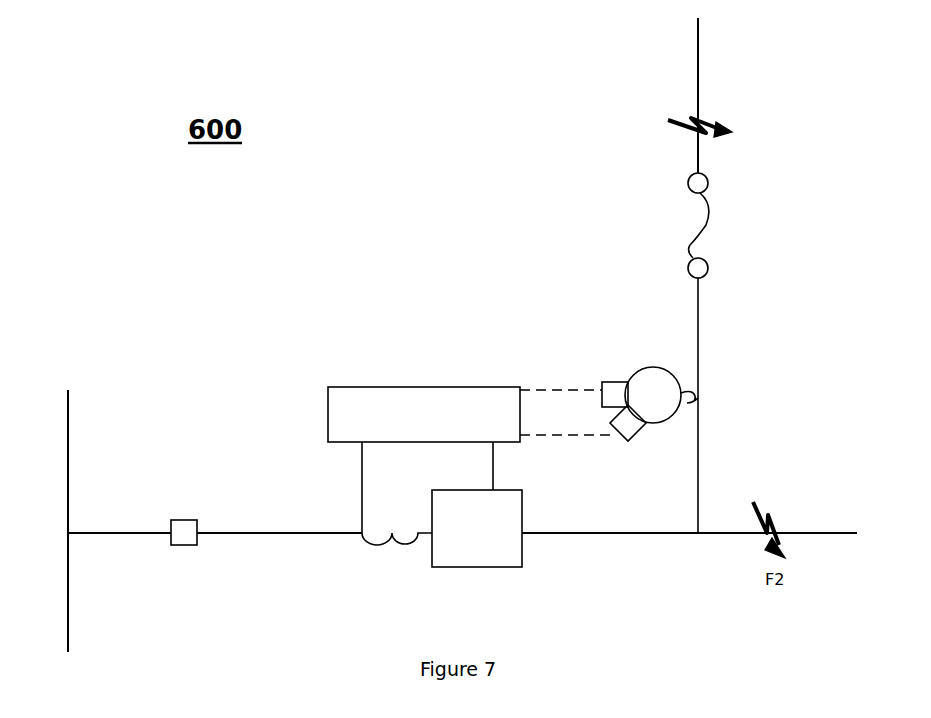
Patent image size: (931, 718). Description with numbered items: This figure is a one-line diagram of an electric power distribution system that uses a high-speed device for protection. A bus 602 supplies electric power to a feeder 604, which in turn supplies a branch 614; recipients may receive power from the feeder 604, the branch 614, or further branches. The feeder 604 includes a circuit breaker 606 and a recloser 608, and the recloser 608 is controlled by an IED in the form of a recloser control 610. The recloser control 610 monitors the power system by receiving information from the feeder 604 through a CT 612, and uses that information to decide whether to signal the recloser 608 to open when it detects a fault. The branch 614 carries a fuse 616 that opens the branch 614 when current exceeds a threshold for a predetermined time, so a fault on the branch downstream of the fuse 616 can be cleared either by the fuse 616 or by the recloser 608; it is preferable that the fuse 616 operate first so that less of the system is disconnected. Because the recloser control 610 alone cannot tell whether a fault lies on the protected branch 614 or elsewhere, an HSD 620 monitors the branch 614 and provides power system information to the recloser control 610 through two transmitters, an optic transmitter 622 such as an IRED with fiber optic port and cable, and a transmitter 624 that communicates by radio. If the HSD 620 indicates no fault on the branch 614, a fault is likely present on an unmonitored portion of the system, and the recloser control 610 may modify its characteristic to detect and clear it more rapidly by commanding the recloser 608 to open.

The bus 602 is at (68, 450).
The feeder 604 is at (264, 535).
The circuit breaker 606 is at (186, 520).
The recloser 608 is at (522, 505).
The recloser control 610 is at (378, 387).
The CT 612 is at (383, 545).
The branch 614 is at (697, 92).
The fuse 616 is at (688, 245).
The HSD 620 is at (662, 367).
The optic transmitter 622 is at (606, 382).
The radio transmitter 624 is at (628, 443).